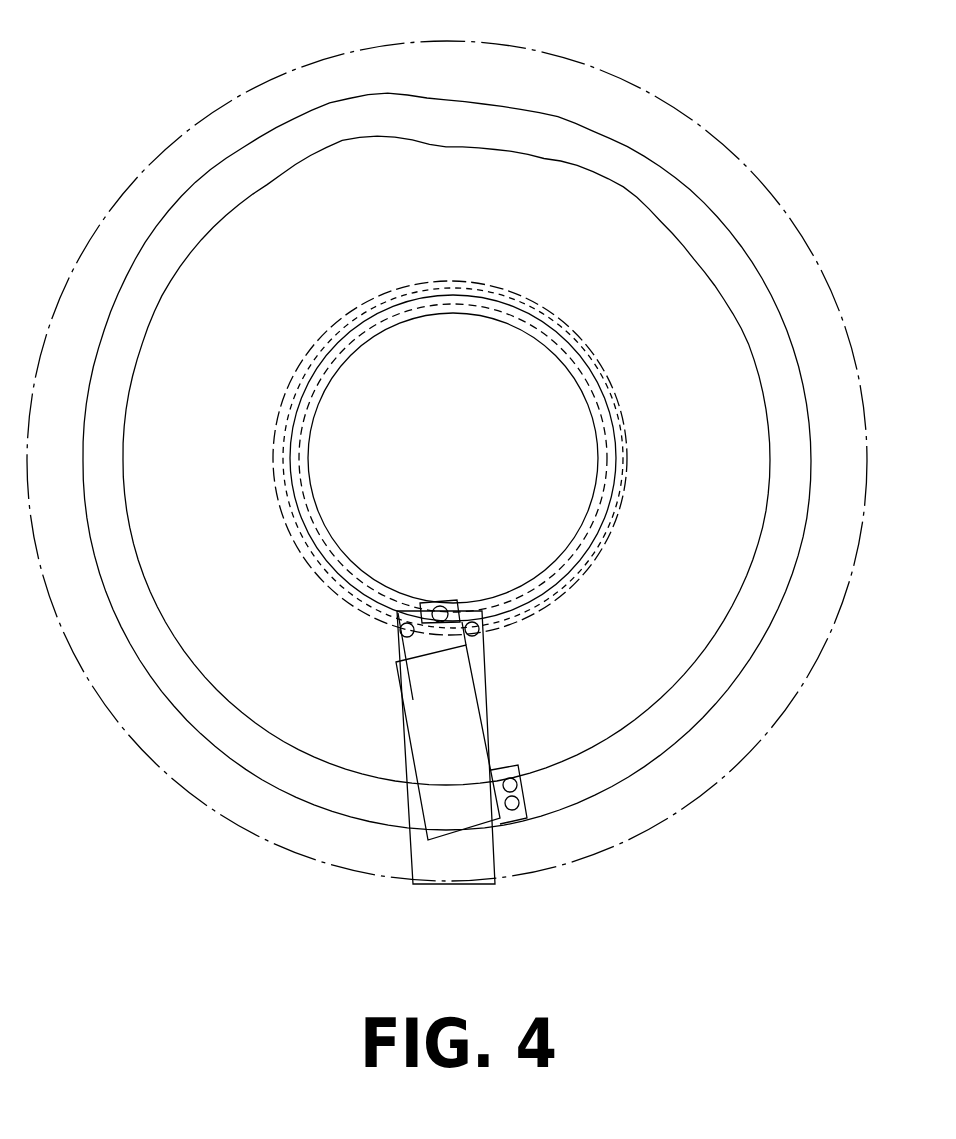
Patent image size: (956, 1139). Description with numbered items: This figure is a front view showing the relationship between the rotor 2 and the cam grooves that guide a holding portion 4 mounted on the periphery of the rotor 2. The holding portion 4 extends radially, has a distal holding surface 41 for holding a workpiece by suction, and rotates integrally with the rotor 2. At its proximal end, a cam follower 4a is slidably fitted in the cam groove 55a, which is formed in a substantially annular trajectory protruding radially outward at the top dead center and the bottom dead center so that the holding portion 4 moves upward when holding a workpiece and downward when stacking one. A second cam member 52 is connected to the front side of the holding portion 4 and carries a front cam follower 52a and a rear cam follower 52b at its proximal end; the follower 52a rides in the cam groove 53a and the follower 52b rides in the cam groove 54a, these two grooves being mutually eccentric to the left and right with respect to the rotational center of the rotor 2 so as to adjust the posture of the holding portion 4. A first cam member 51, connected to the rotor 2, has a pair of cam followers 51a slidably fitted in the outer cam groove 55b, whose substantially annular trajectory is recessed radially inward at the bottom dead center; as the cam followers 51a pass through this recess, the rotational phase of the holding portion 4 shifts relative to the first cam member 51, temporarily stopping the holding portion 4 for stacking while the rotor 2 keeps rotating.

The rotor 2 is at (700, 118).
The cam groove 55b is at (720, 217).
The cam groove 55a is at (583, 353).
The cam groove 53a is at (603, 353).
The cam groove 54a is at (617, 393).
The holding portion 4 is at (407, 792).
The holding surface 41 is at (430, 885).
The cam follower 4a is at (453, 603).
The second cam member 52 is at (487, 677).
The cam follower 52a is at (481, 635).
The cam follower 52b is at (399, 640).
The first cam member 51 is at (512, 828).
The cam followers 51a is at (520, 783).